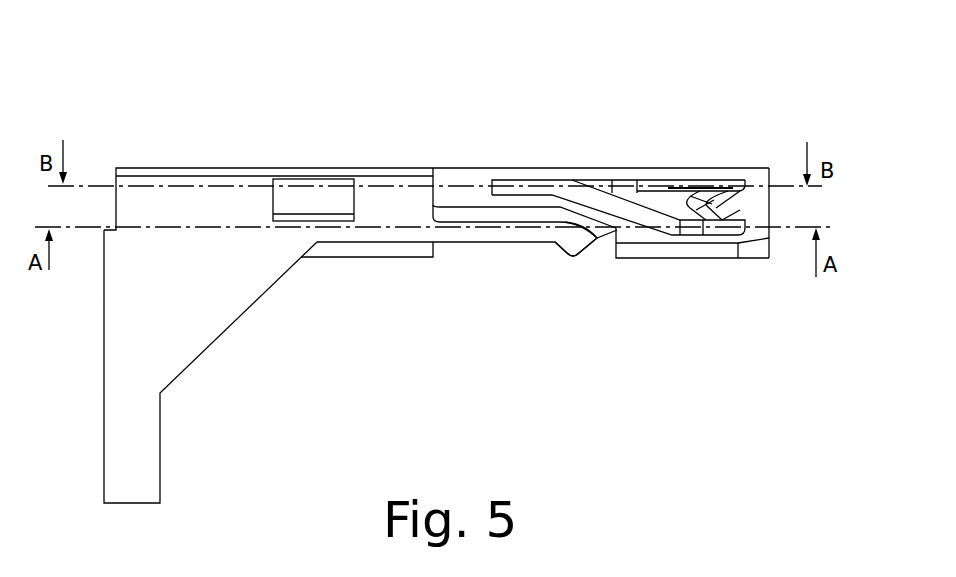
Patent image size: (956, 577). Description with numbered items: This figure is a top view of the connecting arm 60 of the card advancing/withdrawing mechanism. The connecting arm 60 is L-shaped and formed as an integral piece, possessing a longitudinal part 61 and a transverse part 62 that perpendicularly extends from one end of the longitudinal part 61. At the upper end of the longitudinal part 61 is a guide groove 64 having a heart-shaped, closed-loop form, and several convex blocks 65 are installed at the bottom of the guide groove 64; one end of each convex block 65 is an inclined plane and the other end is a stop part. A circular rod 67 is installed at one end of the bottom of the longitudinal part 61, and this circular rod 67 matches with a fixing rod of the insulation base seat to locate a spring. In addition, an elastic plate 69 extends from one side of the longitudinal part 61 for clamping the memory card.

The connecting arm 60 is at (452, 120).
The longitudinal part 61 is at (350, 232).
The transverse part 62 is at (142, 437).
The guide groove 64 is at (688, 180).
The convex blocks 65 is at (622, 170).
The circular rod 67 is at (315, 197).
The elastic plate 69 is at (575, 252).